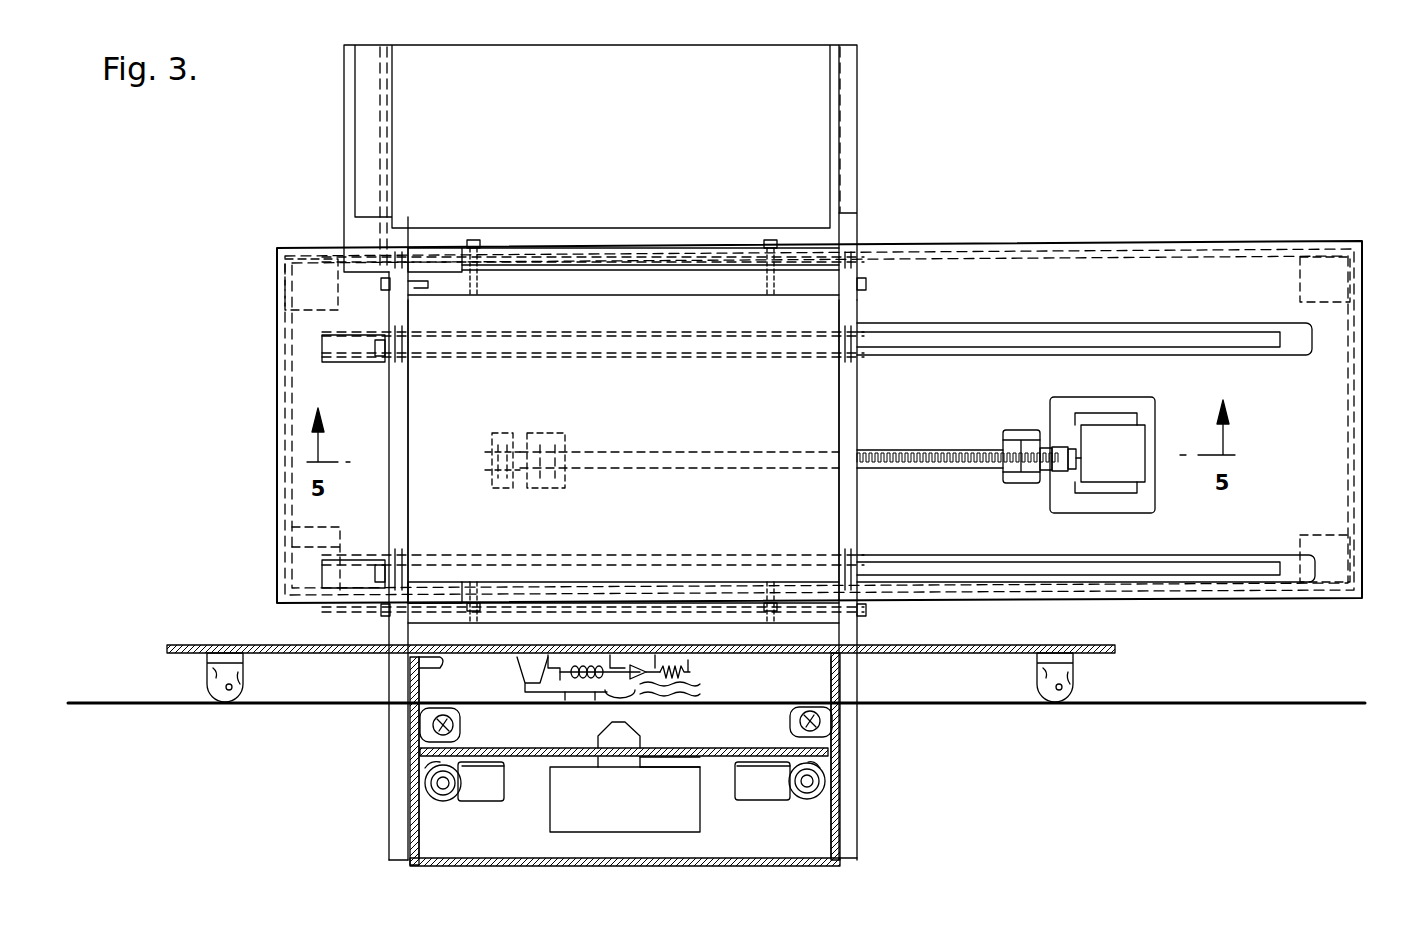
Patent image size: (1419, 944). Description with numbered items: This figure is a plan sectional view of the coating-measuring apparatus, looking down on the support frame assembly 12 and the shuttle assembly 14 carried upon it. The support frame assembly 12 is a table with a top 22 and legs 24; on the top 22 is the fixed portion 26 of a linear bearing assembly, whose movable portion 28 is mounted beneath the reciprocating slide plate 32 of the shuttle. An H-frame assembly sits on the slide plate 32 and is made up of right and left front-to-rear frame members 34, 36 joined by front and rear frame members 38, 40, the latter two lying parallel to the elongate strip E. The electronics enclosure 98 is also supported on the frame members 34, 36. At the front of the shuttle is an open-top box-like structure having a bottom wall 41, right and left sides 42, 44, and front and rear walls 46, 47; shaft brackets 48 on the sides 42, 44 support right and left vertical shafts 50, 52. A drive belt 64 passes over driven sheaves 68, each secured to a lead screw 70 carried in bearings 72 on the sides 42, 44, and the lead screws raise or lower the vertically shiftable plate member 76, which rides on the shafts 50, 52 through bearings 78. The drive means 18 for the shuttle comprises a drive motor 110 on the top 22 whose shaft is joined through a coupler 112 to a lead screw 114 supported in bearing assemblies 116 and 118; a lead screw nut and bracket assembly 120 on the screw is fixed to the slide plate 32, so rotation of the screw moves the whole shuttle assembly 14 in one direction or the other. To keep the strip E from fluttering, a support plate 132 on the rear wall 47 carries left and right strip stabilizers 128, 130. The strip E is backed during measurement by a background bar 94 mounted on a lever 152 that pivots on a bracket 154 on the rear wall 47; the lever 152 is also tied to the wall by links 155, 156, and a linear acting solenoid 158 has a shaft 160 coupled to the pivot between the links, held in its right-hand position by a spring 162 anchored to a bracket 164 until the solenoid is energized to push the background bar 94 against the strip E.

The support frame assembly 12 is at (262, 382).
The shuttle assembly 14 is at (372, 812).
The drive means 18 is at (1140, 388).
The top 22 is at (1082, 275).
The legs 24 is at (286, 316).
The fixed portion of linear bearing assembly 26 is at (322, 348).
The movable portion of linear bearing assembly 28 is at (412, 366).
The slide plate 32 is at (622, 391).
The right front to rear frame member 34 is at (838, 418).
The left front to rear frame member 36 is at (408, 427).
The front frame member 38 is at (497, 592).
The rear frame member 40 is at (553, 285).
The bottom wall 41 is at (476, 841).
The right side 42 is at (842, 818).
The left side 44 is at (410, 838).
The front wall 46 is at (778, 858).
The rear wall 47 is at (389, 672).
The shaft brackets 48 is at (408, 716).
The right vertically extending shaft 50 is at (790, 722).
The left vertically extending shaft 52 is at (460, 722).
The drive belt 64 is at (536, 806).
The driven sheaves 68 is at (462, 783).
The lead screw 70 is at (425, 786).
The bearings 72 is at (420, 772).
The vertically shiftable plate member 76 is at (705, 742).
The bearings 78 is at (460, 742).
The background bar 94 is at (690, 692).
The electronics enclosure 98 is at (590, 113).
The drive motor 110 is at (1097, 465).
The coupler 112 is at (1068, 397).
The lead screw 114 is at (950, 450).
The bearing assembly 116 is at (504, 432).
The bearing assembly 118 is at (1020, 430).
The lead screw nut and bracket assembly 120 is at (565, 490).
The left strip stabilizer 128 is at (1095, 676).
The right strip stabilizer 130 is at (185, 678).
The support plate 132 is at (990, 644).
The lever 152 is at (566, 700).
The bracket 154 is at (525, 666).
The link 155 is at (583, 652).
The link 156 is at (692, 678).
The linear acting solenoid 158 is at (548, 650).
The shaft 160 is at (610, 740).
The spring 162 is at (622, 652).
The bracket 164 is at (688, 652).
The elongate strip E is at (115, 708).